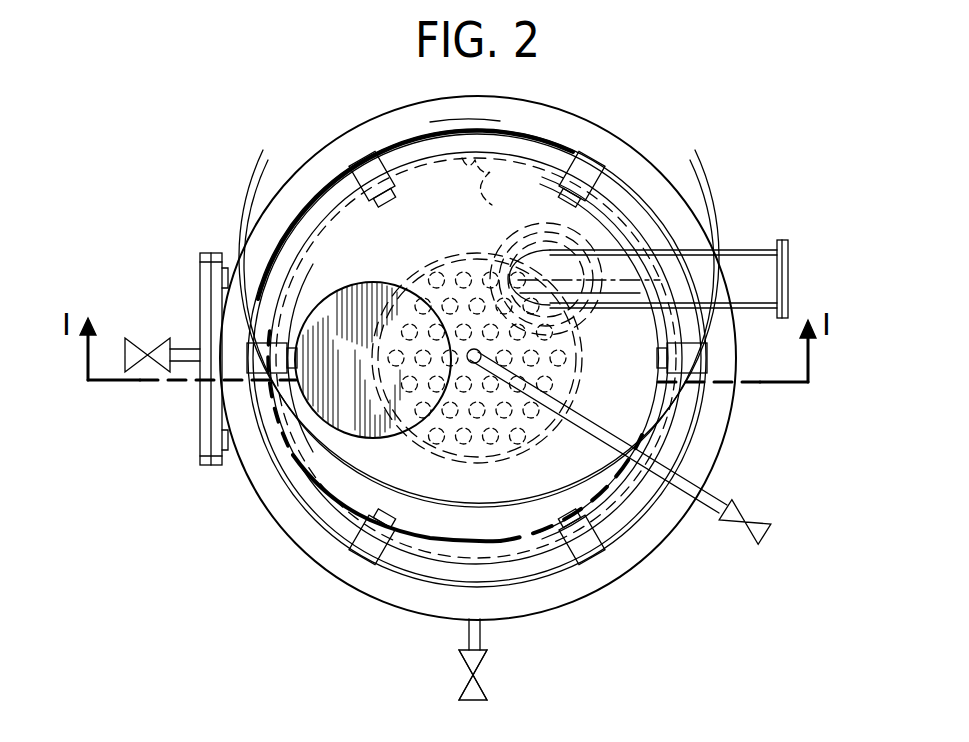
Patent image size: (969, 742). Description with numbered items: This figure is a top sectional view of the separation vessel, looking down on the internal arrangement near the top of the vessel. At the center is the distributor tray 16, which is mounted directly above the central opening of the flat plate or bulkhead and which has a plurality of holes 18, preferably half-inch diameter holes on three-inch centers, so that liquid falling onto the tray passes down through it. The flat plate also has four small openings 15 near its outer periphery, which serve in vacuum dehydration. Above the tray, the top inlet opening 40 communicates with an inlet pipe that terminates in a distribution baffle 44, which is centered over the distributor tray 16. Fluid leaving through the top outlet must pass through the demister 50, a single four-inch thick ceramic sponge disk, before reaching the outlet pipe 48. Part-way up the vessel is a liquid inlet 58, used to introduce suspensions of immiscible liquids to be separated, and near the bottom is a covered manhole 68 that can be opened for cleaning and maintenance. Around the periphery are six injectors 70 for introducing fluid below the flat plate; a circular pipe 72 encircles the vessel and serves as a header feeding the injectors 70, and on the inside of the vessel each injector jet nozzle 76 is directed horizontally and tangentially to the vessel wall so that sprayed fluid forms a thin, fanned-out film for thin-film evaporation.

The small openings 15 is at (492, 192).
The distributor tray 16 is at (462, 268).
The holes 18 is at (595, 393).
The top inlet opening 40 is at (765, 530).
The distribution baffle 44 is at (582, 348).
The outlet pipe 48 is at (740, 250).
The demister 50 is at (620, 215).
The liquid inlet 58 is at (150, 378).
The covered manhole 68 is at (205, 252).
The injectors 70 is at (377, 150).
The circular pipe 72 is at (600, 585).
The injector jet nozzle 76 is at (285, 235).